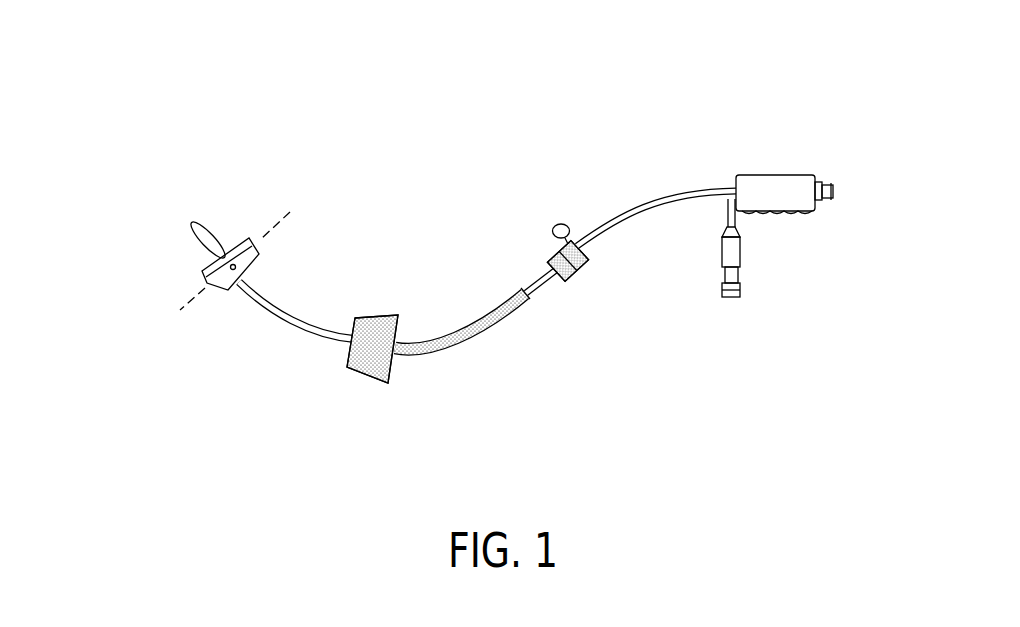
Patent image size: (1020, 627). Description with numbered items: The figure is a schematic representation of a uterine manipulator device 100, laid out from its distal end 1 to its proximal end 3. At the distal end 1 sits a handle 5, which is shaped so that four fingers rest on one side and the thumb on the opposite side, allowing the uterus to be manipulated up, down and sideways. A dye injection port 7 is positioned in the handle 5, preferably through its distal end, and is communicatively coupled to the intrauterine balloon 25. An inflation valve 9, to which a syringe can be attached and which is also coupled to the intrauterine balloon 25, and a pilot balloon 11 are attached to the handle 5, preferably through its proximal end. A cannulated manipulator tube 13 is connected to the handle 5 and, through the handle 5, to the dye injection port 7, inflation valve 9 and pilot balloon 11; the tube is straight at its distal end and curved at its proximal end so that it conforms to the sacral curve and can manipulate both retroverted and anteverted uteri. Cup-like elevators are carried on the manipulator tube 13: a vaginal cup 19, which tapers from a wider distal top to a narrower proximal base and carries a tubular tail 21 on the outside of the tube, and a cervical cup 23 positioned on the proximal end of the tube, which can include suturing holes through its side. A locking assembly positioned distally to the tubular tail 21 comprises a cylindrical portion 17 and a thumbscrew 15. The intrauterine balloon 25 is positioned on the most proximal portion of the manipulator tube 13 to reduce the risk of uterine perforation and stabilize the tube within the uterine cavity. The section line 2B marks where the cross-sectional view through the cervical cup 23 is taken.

The uterine manipulator device 100 is at (306, 65).
The distal end 1 is at (890, 220).
The proximal end 3 is at (112, 267).
The handle 5 is at (805, 210).
The dye injection port 7 is at (832, 182).
The inflation valve 9 is at (729, 298).
The pilot balloon 11 is at (720, 253).
The cannulated manipulator tube 13 is at (692, 188).
The thumbscrew 15 is at (552, 232).
The cylindrical portion 17 is at (560, 277).
The vaginal cup 19 is at (367, 373).
The tubular tail 21 is at (457, 343).
The cervical cup 23 is at (259, 260).
The intrauterine balloon 25 is at (204, 220).
The section line 2B is at (236, 265).